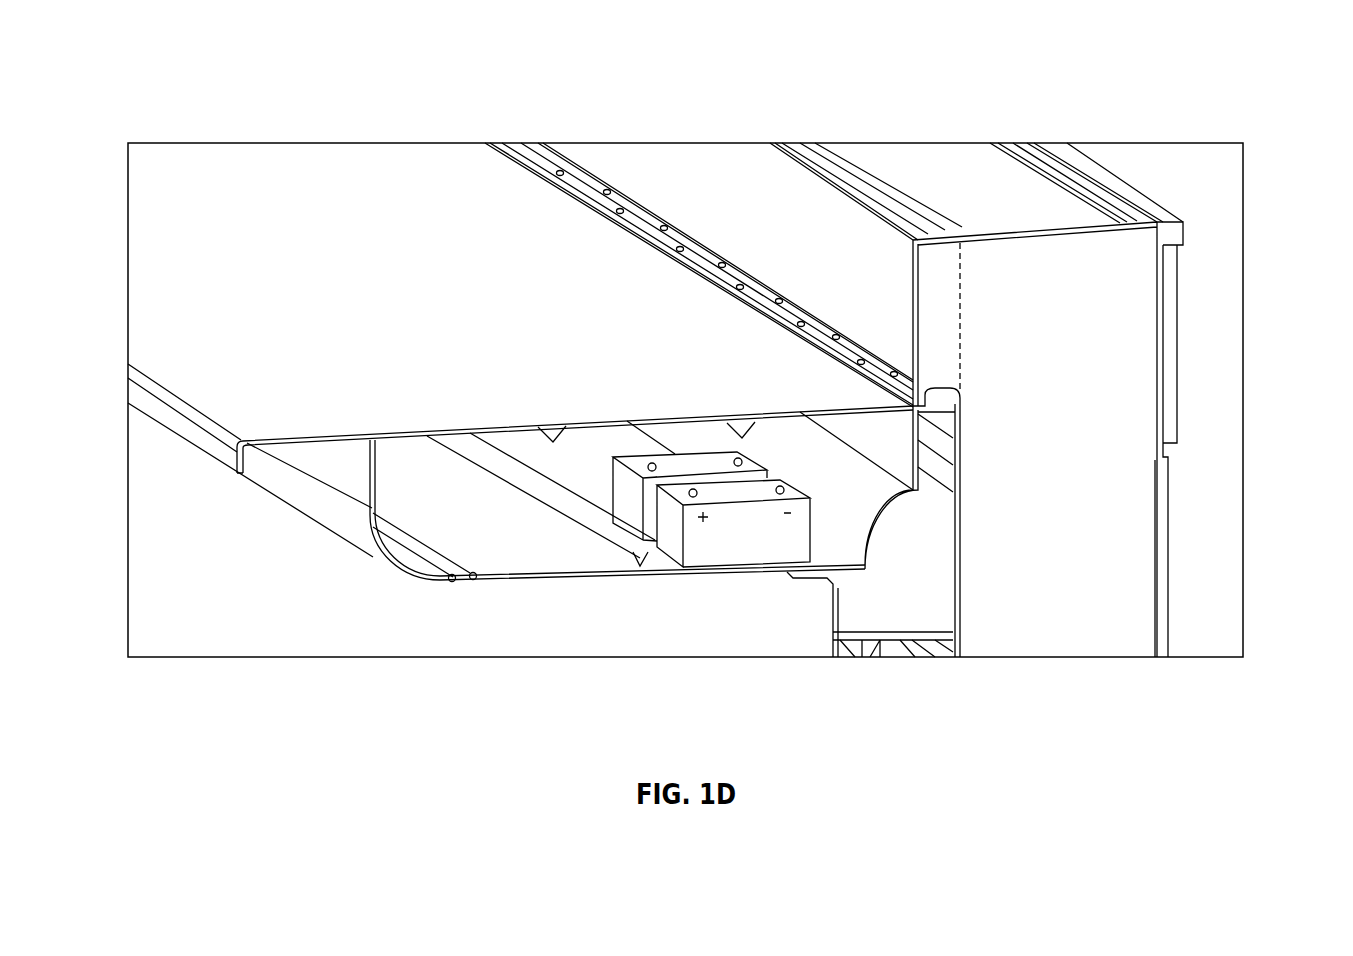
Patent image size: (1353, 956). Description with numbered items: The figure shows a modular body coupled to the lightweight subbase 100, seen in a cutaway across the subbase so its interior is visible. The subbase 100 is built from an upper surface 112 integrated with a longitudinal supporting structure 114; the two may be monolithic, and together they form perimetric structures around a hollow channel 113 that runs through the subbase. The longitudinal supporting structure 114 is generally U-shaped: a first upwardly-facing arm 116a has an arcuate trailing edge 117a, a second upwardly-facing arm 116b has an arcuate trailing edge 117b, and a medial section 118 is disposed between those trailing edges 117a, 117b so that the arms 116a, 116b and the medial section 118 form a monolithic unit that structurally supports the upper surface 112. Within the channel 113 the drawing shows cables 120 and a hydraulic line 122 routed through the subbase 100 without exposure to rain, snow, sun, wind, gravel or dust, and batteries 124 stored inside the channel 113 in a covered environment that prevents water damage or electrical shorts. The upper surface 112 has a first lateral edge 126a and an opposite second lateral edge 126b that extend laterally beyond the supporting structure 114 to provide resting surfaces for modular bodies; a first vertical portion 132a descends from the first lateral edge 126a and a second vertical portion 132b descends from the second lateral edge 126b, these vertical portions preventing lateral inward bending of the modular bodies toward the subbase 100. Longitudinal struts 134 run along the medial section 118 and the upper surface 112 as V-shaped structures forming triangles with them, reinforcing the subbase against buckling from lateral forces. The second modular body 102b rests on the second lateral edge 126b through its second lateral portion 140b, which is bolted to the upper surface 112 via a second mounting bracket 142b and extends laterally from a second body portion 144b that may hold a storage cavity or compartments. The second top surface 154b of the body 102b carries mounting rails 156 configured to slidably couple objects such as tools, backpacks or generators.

The lightweight subbase 100 is at (160, 100).
The second modular body 102b is at (1048, 406).
The upper surface 112 is at (605, 550).
The channel 113 is at (487, 500).
The longitudinal supporting structure 114 is at (318, 492).
The first upwardly-facing arm 116a is at (318, 465).
The second upwardly-facing arm 116b is at (955, 492).
The arcuate trailing edge 117a is at (398, 567).
The arcuate trailing edge 117b is at (910, 527).
The medial section 118 is at (573, 580).
The cables 120 is at (473, 581).
The hydraulic line 122 is at (452, 583).
The batteries 124 is at (708, 550).
The first lateral edge 126a is at (524, 425).
The second lateral edge 126b is at (965, 393).
The first vertical portion 132a is at (228, 458).
The second vertical portion 132b is at (972, 432).
The longitudinal struts 134 is at (555, 432).
The second lateral portion 140b is at (940, 272).
The second mounting bracket 142b is at (808, 305).
The second body portion 144b is at (1088, 618).
The second top surface 154b is at (1015, 205).
The mounting rails 156 is at (898, 175).